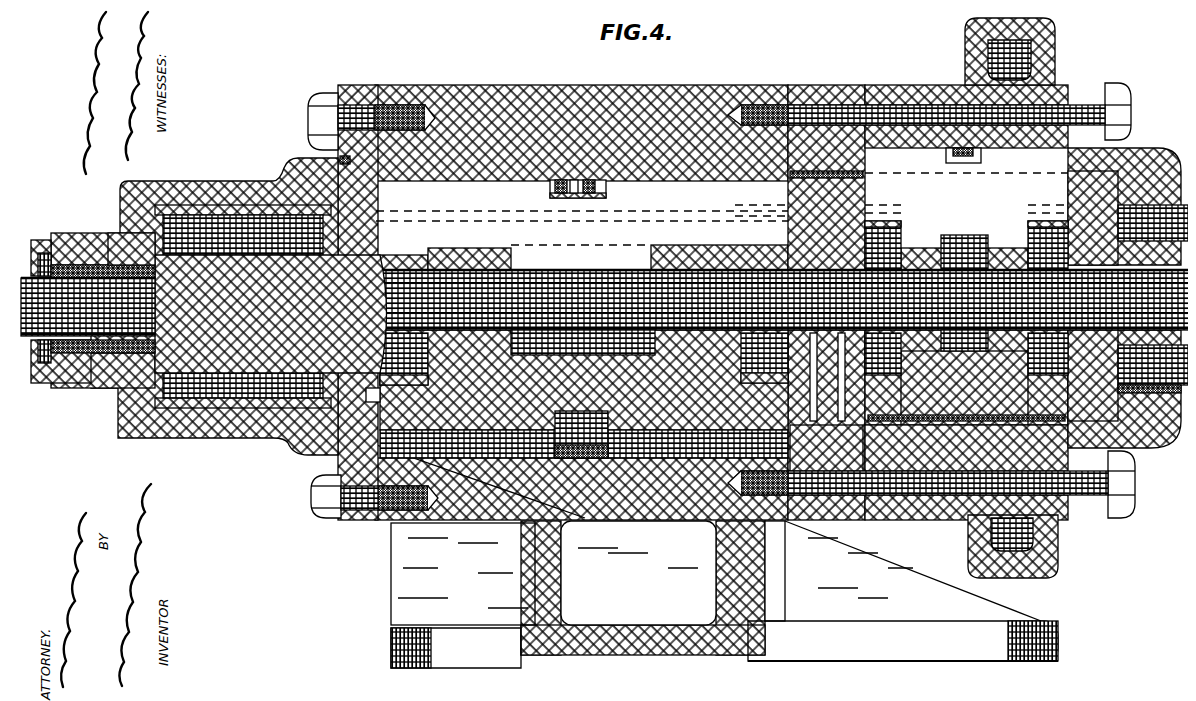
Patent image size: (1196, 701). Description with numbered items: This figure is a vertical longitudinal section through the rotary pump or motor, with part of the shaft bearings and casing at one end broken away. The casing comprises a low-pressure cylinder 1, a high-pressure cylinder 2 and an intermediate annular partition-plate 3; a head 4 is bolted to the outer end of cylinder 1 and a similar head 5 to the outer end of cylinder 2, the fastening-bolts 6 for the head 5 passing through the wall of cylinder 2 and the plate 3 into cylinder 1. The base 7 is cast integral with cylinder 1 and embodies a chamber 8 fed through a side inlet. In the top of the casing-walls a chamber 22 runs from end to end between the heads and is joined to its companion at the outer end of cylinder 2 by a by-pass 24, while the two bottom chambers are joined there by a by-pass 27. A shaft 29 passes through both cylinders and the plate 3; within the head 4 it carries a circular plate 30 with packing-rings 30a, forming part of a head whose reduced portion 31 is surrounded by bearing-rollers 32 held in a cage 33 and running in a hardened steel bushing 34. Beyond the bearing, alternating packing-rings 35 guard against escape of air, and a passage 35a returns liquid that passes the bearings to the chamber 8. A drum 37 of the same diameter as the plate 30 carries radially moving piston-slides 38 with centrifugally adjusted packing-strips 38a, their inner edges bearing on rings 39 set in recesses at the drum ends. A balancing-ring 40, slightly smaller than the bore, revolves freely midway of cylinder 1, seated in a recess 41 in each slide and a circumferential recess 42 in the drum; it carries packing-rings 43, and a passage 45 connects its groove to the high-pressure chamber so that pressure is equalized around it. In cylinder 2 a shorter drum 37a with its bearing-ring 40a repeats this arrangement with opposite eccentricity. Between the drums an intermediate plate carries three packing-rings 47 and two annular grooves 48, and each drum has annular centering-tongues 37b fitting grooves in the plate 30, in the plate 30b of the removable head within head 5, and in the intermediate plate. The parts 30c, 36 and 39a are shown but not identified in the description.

The low-pressure cylinder 1 is at (558, 290).
The high-pressure cylinder 2 is at (966, 288).
The annular partition-plate 3 is at (826, 288).
The head 4 is at (194, 305).
The head 5 is at (1124, 290).
The fastening-bolts 6 is at (941, 111).
The base 7 is at (903, 674).
The chamber 8 is at (724, 594).
The chamber 22 is at (827, 375).
The by-pass 24 is at (1025, 43).
The by-pass 27 is at (958, 530).
The shaft 29 is at (88, 307).
The circular plate 30 is at (358, 302).
The packing-rings 30a is at (344, 163).
The plate 30b is at (1131, 295).
The packing 30c is at (1149, 358).
The reduced portion of head 31 is at (271, 314).
The bearing-rollers 32 is at (243, 306).
The cage 33 is at (160, 345).
The steel bushing 34 is at (243, 199).
The packing-rings 35 is at (131, 249).
The passage 35a is at (195, 432).
The gland 36 is at (60, 375).
The drum 37 is at (784, 350).
The drum 37a is at (964, 364).
The annular centering-tongue 37b is at (708, 393).
The piston-slides 38 is at (582, 225).
The packing-strips 38a is at (896, 193).
The rings 39 is at (724, 359).
The bearing 39a is at (870, 213).
The balancing-ring 40 is at (598, 178).
The bearing-ring 40a is at (943, 163).
The recess 41 is at (568, 172).
The circumferential recess 42 is at (584, 434).
The packing-rings 43 is at (551, 173).
The passage 45 is at (596, 173).
The packing-rings 47 is at (826, 162).
The annular grooves 48 is at (826, 448).